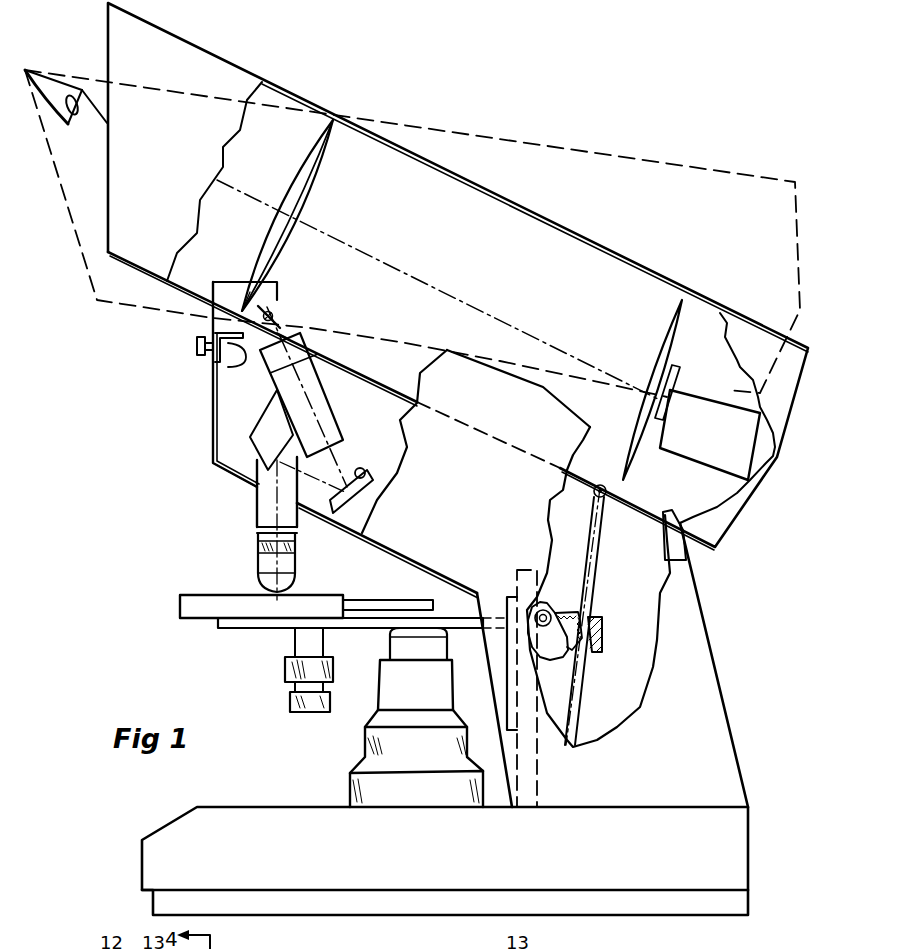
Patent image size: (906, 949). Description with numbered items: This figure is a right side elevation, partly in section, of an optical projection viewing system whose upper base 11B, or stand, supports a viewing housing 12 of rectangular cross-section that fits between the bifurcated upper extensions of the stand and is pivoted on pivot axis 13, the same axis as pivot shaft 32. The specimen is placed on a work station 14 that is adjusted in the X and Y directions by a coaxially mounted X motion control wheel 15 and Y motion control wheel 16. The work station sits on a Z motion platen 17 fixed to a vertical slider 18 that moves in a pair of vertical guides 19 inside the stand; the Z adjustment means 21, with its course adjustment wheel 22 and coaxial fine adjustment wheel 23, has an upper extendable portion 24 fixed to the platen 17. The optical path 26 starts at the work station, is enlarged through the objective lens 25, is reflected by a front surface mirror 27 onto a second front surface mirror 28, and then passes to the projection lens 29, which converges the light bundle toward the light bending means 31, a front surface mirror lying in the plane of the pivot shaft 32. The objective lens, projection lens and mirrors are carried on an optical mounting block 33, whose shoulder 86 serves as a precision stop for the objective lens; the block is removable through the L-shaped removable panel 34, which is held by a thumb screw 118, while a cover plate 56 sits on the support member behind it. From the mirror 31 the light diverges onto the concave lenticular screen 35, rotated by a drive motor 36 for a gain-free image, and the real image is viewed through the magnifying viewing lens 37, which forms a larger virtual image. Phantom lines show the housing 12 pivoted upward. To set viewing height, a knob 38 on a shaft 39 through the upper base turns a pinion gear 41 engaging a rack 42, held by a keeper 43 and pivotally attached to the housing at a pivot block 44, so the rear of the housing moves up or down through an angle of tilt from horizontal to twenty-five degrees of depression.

The viewing housing 12 is at (588, 146).
The pivot axis 13 is at (247, 287).
The work station 14 is at (193, 597).
The X motion control wheel 15 is at (290, 707).
The Y motion control wheel 16 is at (285, 672).
The Z motion platen 17 is at (241, 629).
The vertical slider 18 is at (506, 598).
The vertical guides 19 is at (530, 760).
The Z adjustment means 21 is at (279, 756).
The course adjustment wheel 22 is at (350, 790).
The fine adjustment wheel 23 is at (365, 746).
The upper extendable portion 24 is at (393, 649).
The objective lens 25 is at (263, 564).
The optical path 26 is at (308, 405).
The front surface mirror 27 is at (253, 488).
The second front surface mirror 28 is at (387, 471).
The projection lens 29 is at (272, 396).
The light bending means 31 is at (273, 311).
The pivot shaft 32 is at (213, 320).
The optical mounting block 33 is at (392, 433).
The removable panel 34 is at (213, 403).
The lenticular screen 35 is at (673, 320).
The drive motor 36 is at (726, 444).
The magnifying viewing lens 37 is at (310, 176).
The knob 38 is at (552, 660).
The shaft 39 is at (580, 645).
The pinion gear 41 is at (552, 612).
The rack 42 is at (595, 571).
The keeper 43 is at (603, 625).
The pivot block 44 is at (606, 498).
The cover plate 56 is at (214, 367).
The shoulder 86 is at (295, 531).
The thumb screw 118 is at (197, 344).
The upper base 11B is at (490, 509).